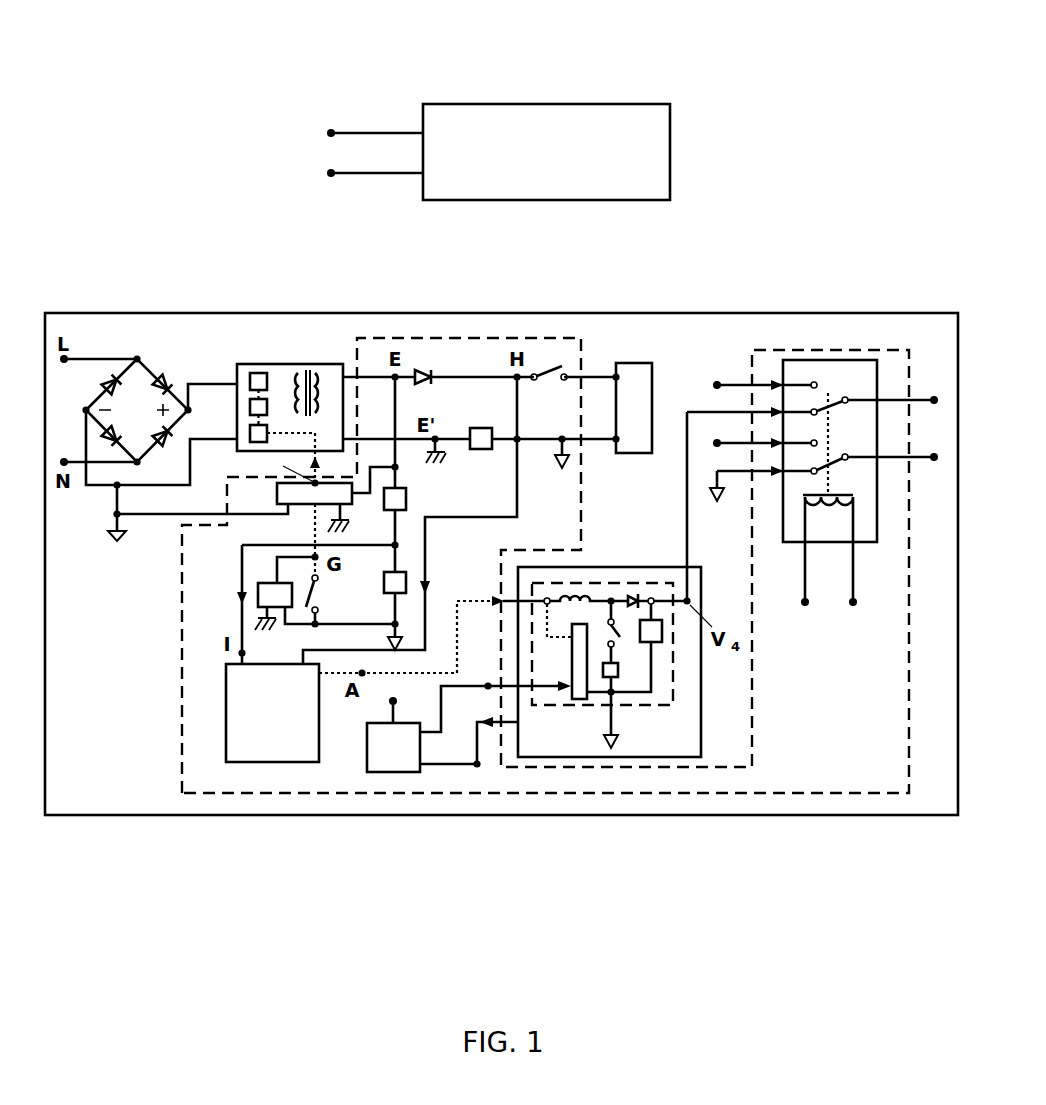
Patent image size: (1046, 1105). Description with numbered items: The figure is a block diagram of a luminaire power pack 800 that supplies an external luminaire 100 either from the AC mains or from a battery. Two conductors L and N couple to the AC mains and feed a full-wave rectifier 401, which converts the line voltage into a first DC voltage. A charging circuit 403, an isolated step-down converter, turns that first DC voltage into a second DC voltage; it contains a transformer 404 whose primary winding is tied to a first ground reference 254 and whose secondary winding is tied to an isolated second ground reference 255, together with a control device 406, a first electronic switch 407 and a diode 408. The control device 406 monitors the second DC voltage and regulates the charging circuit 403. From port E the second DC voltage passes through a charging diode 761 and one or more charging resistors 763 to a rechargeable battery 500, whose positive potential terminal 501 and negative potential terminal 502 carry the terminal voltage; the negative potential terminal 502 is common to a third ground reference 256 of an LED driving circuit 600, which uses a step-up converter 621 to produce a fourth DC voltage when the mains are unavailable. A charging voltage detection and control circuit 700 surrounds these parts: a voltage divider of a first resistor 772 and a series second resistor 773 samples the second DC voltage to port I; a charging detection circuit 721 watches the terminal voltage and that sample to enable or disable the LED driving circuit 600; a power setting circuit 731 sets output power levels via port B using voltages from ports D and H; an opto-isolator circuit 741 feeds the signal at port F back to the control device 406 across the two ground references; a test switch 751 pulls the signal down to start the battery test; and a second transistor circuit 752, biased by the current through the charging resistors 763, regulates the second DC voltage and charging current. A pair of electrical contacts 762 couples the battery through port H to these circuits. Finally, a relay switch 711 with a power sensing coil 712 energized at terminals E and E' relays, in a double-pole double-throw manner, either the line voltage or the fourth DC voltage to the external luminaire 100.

The external luminaire 100 is at (613, 104).
The luminaire power pack 800 is at (758, 313).
The charging voltage detection and control circuit 700 is at (557, 795).
The full-wave rectifier 401 is at (119, 352).
The charging circuit 403 is at (275, 376).
The transformer 404 is at (310, 371).
The diode 408 is at (258, 373).
The first electronic switch 407 is at (250, 406).
The control device 406 is at (250, 443).
The charging diode 761 is at (427, 370).
The pair of electrical contacts 762 is at (549, 368).
The charging resistors 763 is at (483, 428).
The positive potential terminal 501 is at (615, 372).
The negative potential terminal 502 is at (614, 444).
The rechargeable battery 500 is at (636, 456).
The second ground reference 255 is at (437, 463).
The third ground reference 256 is at (560, 472).
The first ground reference 254 is at (113, 546).
The opto-isolator circuit 741 is at (352, 505).
The test switch 751 is at (300, 580).
The second transistor circuit 752 is at (258, 583).
The first resistor 772 is at (407, 502).
The second resistor 773 is at (407, 580).
The charging detection circuit 721 is at (319, 750).
The power setting circuit 731 is at (415, 772).
The LED driving circuit 600 is at (664, 713).
The step-up converter 621 is at (673, 664).
The relay switch 711 is at (833, 517).
The power sensing coil 712 is at (826, 508).